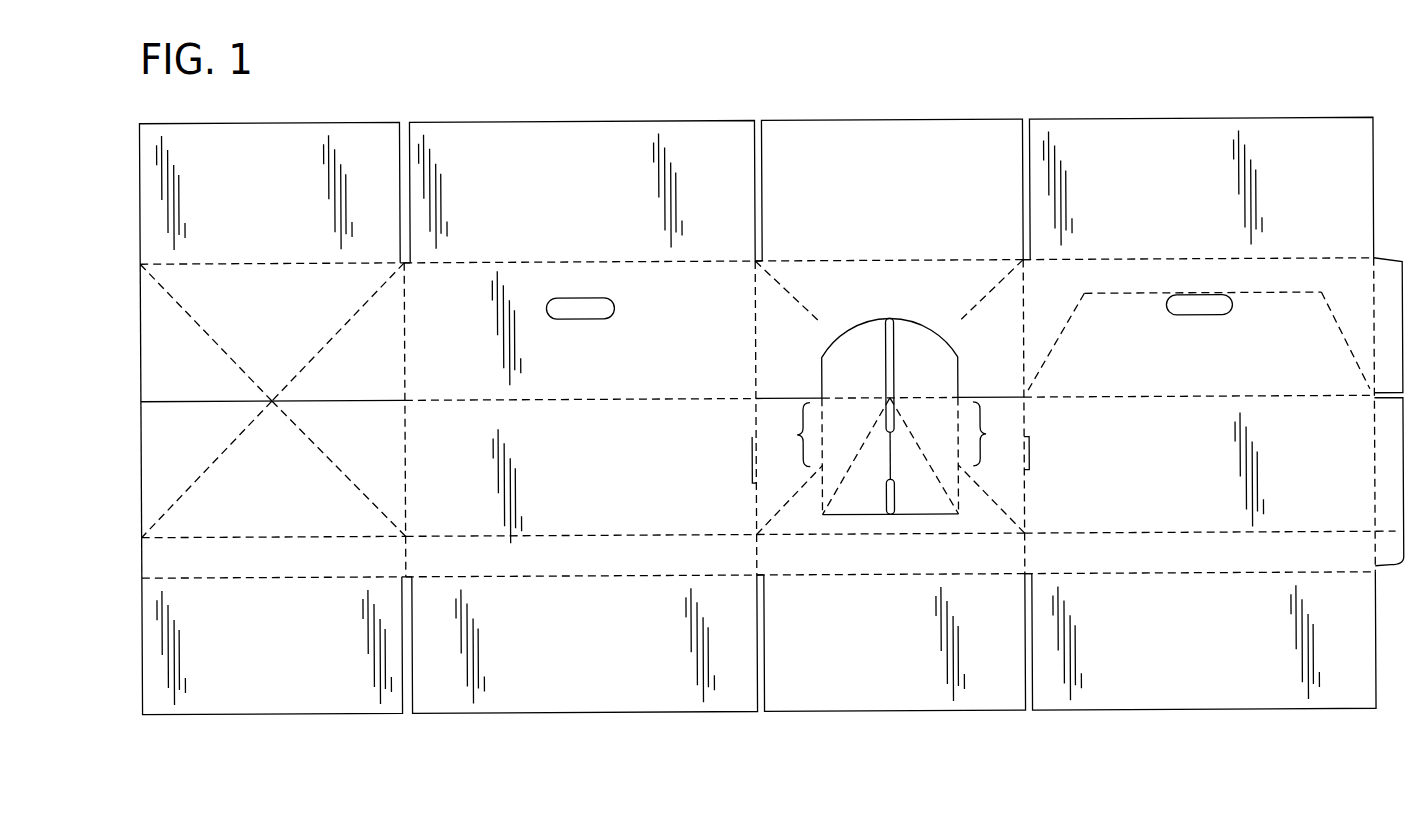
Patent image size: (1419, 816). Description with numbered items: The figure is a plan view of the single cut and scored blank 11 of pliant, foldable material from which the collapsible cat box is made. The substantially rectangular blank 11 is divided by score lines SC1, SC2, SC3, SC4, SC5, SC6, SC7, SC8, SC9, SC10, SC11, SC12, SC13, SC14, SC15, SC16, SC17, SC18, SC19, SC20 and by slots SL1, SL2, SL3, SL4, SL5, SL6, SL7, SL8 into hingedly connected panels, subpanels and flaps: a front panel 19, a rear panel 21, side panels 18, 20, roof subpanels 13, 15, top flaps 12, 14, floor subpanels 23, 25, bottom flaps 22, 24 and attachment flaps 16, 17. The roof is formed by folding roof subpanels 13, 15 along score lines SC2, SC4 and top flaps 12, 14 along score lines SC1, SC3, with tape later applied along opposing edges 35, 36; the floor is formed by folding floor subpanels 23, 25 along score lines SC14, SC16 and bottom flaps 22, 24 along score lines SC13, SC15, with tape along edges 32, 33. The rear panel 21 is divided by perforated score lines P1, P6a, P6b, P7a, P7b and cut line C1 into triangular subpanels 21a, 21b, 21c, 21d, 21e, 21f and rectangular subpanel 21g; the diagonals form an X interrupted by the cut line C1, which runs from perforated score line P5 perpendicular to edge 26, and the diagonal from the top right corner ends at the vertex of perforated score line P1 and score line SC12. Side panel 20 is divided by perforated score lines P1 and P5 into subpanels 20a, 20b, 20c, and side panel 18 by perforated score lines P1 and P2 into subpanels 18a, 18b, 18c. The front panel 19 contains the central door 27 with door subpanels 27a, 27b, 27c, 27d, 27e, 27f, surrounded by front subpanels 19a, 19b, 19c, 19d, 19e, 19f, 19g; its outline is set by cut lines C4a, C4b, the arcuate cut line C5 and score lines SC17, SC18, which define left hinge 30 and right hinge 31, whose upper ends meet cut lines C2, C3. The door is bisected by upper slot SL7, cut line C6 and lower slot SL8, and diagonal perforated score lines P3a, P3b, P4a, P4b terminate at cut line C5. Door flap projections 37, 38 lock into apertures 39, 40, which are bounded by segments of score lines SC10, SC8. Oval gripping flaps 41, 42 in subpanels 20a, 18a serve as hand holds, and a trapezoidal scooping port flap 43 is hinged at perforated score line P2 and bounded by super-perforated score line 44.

The blank 11 is at (361, 96).
The top flap 12 is at (243, 178).
The roof subpanel 13 is at (568, 178).
The top flap 14 is at (878, 178).
The roof subpanel 15 is at (1185, 178).
The attachment flap 16 is at (1393, 297).
The attachment flap 17 is at (1393, 503).
The side panel 18 is at (1178, 351).
The subpanel 18a is at (1176, 384).
The subpanel 18b is at (1175, 472).
The subpanel 18c is at (1184, 561).
The front panel 19 is at (870, 303).
The front subpanel 19a is at (756, 364).
The front subpanel 19b is at (928, 297).
The front subpanel 19c is at (1058, 330).
The front subpanel 19d is at (1022, 430).
The front subpanel 19e is at (803, 518).
The front subpanel 19f is at (796, 471).
The front subpanel 19g is at (853, 562).
The side panel 20 is at (546, 351).
The subpanel 20a is at (561, 384).
The subpanel 20b is at (575, 476).
The subpanel 20c is at (540, 569).
The rear panel 21 is at (257, 306).
The subpanel 21a is at (170, 375).
The subpanel 21b is at (250, 353).
The subpanel 21c is at (345, 375).
The subpanel 21d is at (339, 433).
The subpanel 21e is at (259, 477).
The subpanel 21f is at (173, 438).
The subpanel 21g is at (241, 569).
The bottom flap 22 is at (256, 667).
The floor subpanel 23 is at (533, 667).
The bottom flap 24 is at (866, 681).
The floor subpanel 25 is at (1175, 667).
The edge 26 is at (140, 292).
The door 27 is at (918, 310).
The door subpanel 27a is at (836, 369).
The door subpanel 27b is at (900, 369).
The door subpanel 27c is at (1028, 462).
The door subpanel 27d is at (958, 518).
The door subpanel 27e is at (826, 518).
The door subpanel 27f is at (800, 438).
The left hinge 30 is at (800, 416).
The right hinge 31 is at (985, 416).
The edge 32 is at (592, 713).
The edge 33 is at (1202, 712).
The edge 35 is at (592, 119).
The edge 36 is at (1180, 119).
The door flap projection 37 is at (860, 444).
The door flap projection 38 is at (906, 398).
The aperture 39 is at (752, 458).
The aperture 40 is at (1022, 454).
The gripping flap 41 is at (600, 320).
The gripping flap 42 is at (1218, 318).
The scooping port flap 43 is at (1280, 297).
The super-perforated score line 44 is at (1333, 318).
The cut line C1 is at (178, 398).
The cut line C2 is at (784, 398).
The cut line C3 is at (986, 398).
The cut line C4a is at (856, 456).
The cut line C4b is at (924, 455).
The cut line C5 is at (860, 334).
The cut line C6 is at (902, 450).
The perforated score line P1 is at (363, 540).
The perforated score line P2 is at (1260, 400).
The perforated score line P3a is at (803, 303).
The perforated score line P3b is at (1022, 488).
The perforated score line P4a is at (987, 303).
The perforated score line P4b is at (790, 505).
The perforated score line P5 is at (615, 399).
The perforated score line P6a is at (205, 330).
The perforated score line P6b is at (343, 468).
The perforated score line P7a is at (335, 330).
The perforated score line P7b is at (212, 463).
The score line SC1 is at (292, 261).
The score line SC2 is at (546, 261).
The score line SC3 is at (891, 258).
The score line SC4 is at (1182, 261).
The score line SC5 is at (1375, 322).
The score line SC6 is at (1375, 452).
The score line SC7 is at (1022, 341).
The score line SC8 is at (1022, 513).
The score line SC9 is at (754, 303).
The score line SC10 is at (753, 508).
The score line SC11 is at (408, 312).
The score line SC12 is at (408, 440).
The score line SC13 is at (298, 578).
The score line SC14 is at (652, 577).
The score line SC15 is at (897, 518).
The score line SC16 is at (1203, 574).
The score line SC17 is at (818, 496).
The score line SC18 is at (948, 498).
The score line SC19 is at (846, 396).
The score line SC20 is at (960, 392).
The slot SL1 is at (402, 119).
The slot SL2 is at (760, 119).
The slot SL3 is at (1028, 119).
The slot SL4 is at (1030, 711).
The slot SL5 is at (762, 711).
The slot SL6 is at (405, 713).
The slot SL7 is at (907, 317).
The slot SL8 is at (923, 490).